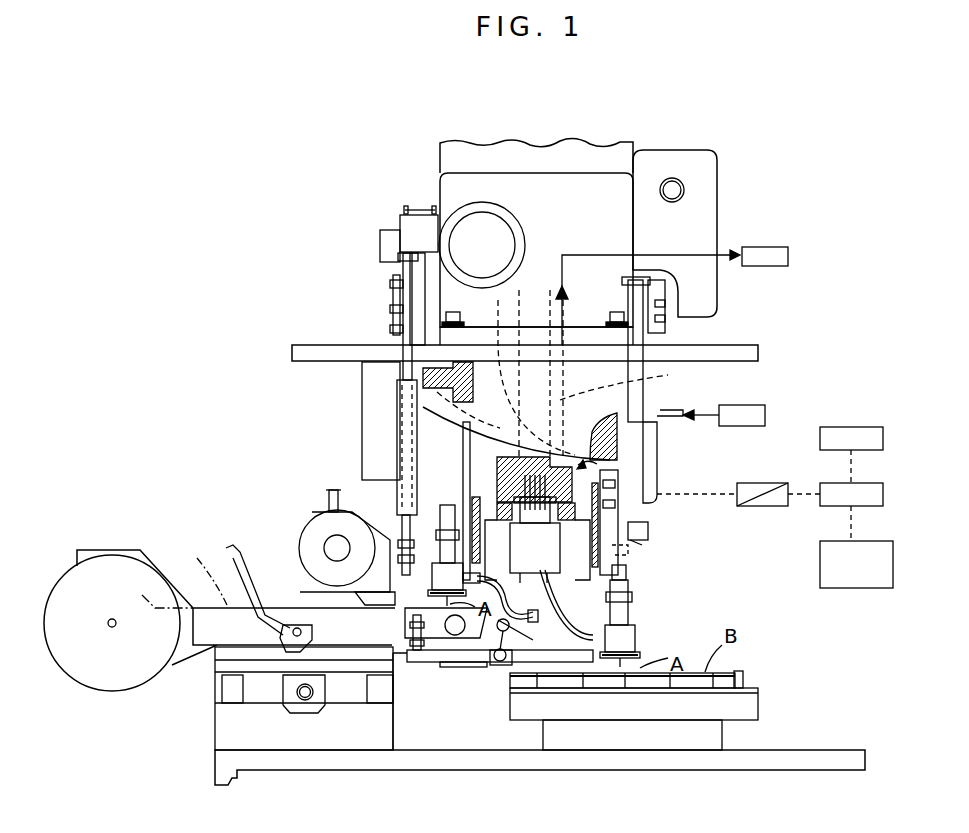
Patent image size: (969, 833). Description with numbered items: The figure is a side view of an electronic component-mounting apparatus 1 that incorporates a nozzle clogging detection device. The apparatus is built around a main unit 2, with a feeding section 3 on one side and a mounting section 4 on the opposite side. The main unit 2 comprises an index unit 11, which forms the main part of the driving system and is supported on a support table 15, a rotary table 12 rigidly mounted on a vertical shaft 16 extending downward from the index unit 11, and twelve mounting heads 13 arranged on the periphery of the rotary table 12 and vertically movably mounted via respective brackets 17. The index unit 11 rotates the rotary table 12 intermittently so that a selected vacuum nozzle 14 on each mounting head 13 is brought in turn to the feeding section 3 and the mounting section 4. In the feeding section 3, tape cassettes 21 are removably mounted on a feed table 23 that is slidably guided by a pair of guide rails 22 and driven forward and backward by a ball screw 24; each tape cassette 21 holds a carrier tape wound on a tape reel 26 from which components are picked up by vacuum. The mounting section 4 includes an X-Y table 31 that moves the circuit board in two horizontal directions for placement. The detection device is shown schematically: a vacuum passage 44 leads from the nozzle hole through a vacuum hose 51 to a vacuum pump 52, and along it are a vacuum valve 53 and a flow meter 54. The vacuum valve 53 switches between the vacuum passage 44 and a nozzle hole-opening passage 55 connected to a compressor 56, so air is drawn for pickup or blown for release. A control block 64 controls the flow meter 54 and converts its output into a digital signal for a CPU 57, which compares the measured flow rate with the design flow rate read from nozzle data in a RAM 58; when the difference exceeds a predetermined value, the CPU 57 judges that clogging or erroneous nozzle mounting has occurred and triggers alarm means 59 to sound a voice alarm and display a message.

The electronic component-mounting apparatus 1 is at (746, 196).
The main unit 2 is at (664, 171).
The feeding section 3 is at (75, 551).
The mounting section 4 is at (746, 673).
The index unit 11 is at (441, 190).
The rotary table 12 is at (483, 445).
The mounting head 13 is at (437, 580).
The vacuum nozzle 14 is at (447, 605).
The support table 15 is at (738, 345).
The vertical shaft 16 is at (470, 365).
The bracket 17 is at (460, 493).
The tape cassette 21 is at (275, 553).
The guide rail 22 is at (222, 700).
The feed table 23 is at (330, 675).
The ball screw 24 is at (290, 712).
The tape reel 26 is at (105, 690).
The X-Y table 31 is at (790, 683).
The vacuum passage 44 is at (640, 384).
The vacuum hose 51 is at (620, 550).
The vacuum pump 52 is at (790, 260).
The vacuum valve 53 is at (620, 521).
The flow meter 54 is at (600, 493).
The nozzle hole-opening passage 55 is at (659, 484).
The compressor 56 is at (758, 406).
The CPU 57 is at (868, 483).
The RAM 58 is at (852, 427).
The alarm means 59 is at (872, 541).
The control block 64 is at (750, 507).